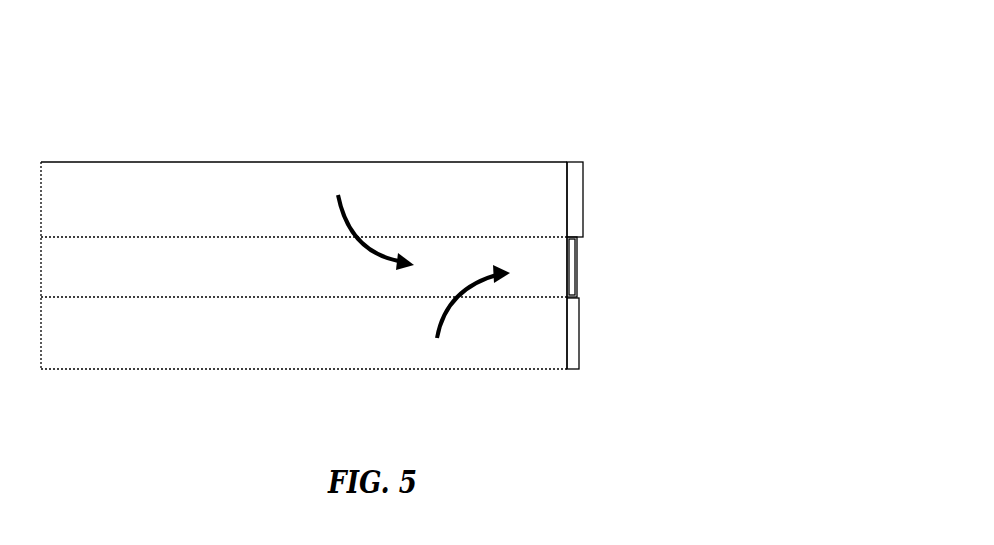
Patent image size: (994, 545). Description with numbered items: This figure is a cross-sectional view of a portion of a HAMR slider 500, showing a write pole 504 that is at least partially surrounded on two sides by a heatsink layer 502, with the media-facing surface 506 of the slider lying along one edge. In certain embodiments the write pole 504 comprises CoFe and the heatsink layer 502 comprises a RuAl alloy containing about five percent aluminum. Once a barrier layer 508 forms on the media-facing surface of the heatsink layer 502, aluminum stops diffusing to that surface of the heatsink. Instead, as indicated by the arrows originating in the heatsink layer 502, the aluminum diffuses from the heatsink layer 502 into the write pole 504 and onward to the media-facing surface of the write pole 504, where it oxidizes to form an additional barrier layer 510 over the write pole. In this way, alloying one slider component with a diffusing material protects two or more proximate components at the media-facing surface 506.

The HAMR slider 500 is at (562, 74).
The heatsink layer 502 is at (304, 265).
The write pole 504 is at (304, 267).
The media-facing surface 506 is at (583, 165).
The barrier layer 508 is at (583, 237).
The additional barrier layer 510 is at (577, 272).